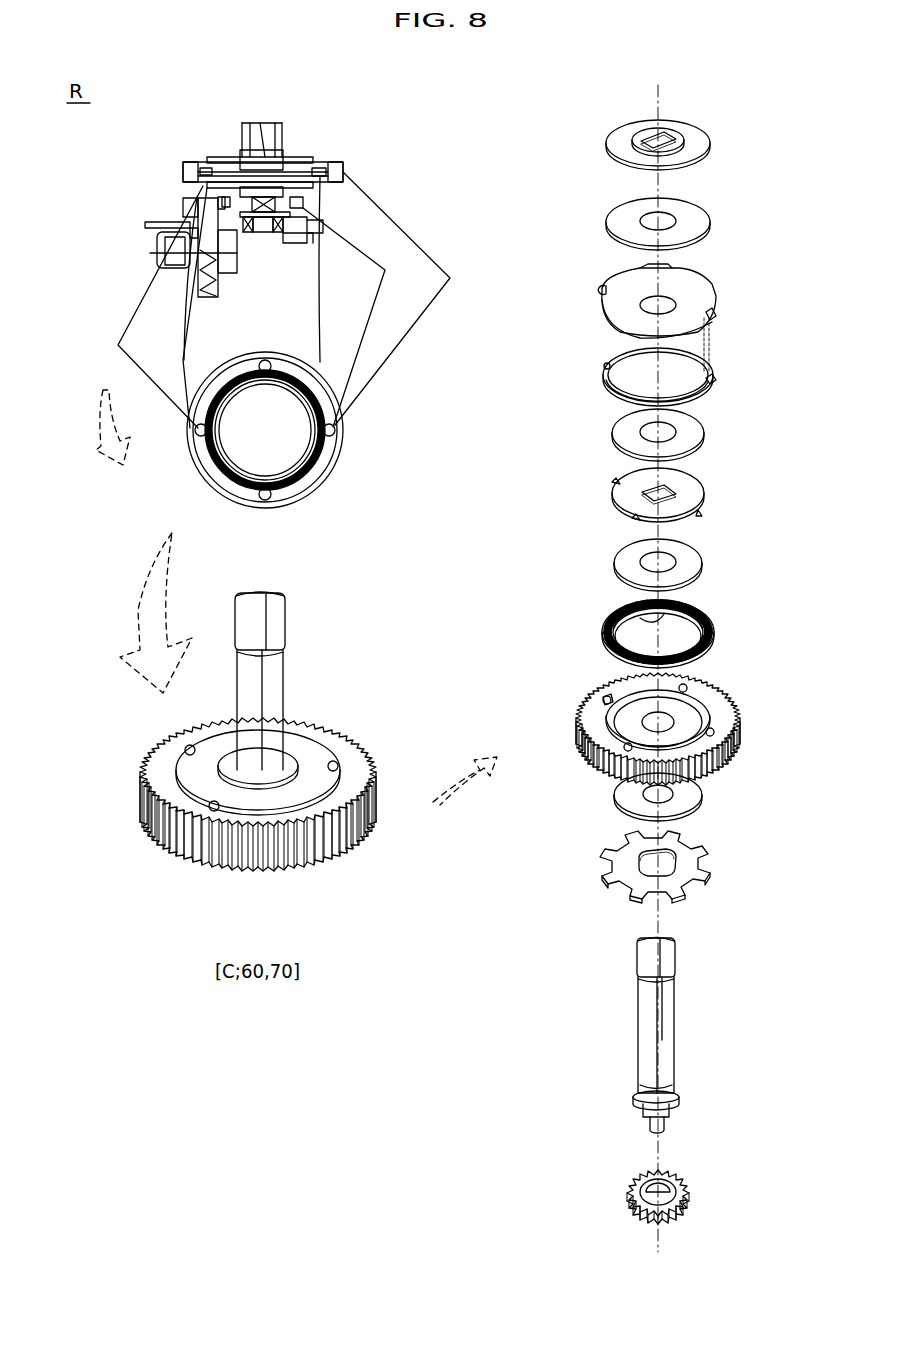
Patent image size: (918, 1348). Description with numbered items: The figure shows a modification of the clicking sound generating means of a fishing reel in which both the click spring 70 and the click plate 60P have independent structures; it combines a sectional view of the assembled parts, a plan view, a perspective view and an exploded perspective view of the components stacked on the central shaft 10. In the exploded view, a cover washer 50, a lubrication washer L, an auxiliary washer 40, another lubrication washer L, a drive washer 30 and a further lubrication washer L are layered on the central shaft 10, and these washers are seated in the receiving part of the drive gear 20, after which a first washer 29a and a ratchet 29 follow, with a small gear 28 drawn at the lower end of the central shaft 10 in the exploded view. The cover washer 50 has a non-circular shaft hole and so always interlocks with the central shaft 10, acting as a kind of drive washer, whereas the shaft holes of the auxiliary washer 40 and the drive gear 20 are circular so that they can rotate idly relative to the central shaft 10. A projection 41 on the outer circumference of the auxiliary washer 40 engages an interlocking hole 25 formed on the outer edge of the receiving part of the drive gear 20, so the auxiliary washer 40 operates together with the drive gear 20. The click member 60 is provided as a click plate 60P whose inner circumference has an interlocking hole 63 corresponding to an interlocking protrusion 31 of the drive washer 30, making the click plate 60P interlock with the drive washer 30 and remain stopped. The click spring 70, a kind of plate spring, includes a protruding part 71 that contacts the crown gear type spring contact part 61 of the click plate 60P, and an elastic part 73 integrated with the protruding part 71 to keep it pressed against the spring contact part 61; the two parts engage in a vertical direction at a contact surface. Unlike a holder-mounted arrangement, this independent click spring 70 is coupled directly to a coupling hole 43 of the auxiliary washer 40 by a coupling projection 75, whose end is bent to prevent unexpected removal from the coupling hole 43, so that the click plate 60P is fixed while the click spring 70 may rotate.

The central shaft 10 is at (290, 130).
The drive gear 20 is at (340, 172).
The interlocking hole 25 is at (606, 696).
The pinion gear 28 is at (303, 210).
The ratchet 29 is at (330, 195).
The first washer 29a is at (700, 788).
The drive washer 30 is at (712, 474).
The interlocking protrusion 31 is at (704, 508).
The auxiliary washer 40 is at (700, 262).
The projection 41 is at (600, 280).
The coupling hole 43 is at (718, 308).
The cover washer 50 is at (310, 752).
The click member 60 is at (658, 634).
The click plate 60P is at (710, 606).
The spring contact part 61 is at (716, 636).
The interlocking hole 63 is at (640, 618).
The click spring 70 is at (502, 404).
The protruding part 71 is at (604, 360).
The elastic part 73 is at (598, 388).
The coupling projection 75 is at (716, 386).
The lubrication washer L is at (688, 206).